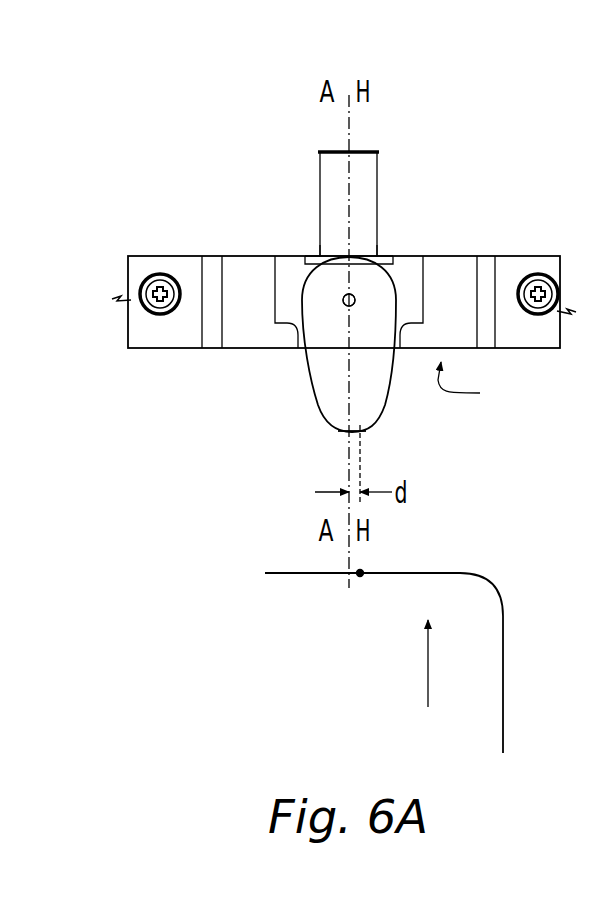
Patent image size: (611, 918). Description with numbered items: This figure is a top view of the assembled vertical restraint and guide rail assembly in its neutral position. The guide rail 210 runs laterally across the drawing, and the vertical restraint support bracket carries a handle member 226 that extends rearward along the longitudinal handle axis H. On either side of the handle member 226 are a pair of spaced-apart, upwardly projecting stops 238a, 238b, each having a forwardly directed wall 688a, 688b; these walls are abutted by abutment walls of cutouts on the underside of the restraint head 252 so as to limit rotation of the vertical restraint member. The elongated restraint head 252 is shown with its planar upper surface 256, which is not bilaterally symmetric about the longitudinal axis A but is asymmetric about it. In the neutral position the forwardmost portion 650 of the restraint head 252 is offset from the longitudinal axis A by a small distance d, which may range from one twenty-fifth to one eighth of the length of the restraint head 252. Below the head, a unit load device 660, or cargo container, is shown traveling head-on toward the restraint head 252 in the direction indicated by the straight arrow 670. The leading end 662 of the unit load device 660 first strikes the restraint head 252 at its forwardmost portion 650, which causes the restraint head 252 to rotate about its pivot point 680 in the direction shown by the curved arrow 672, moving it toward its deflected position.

The guide rail 210 is at (234, 273).
The handle member 226 is at (372, 150).
The upwardly projecting stop 238a is at (310, 255).
The upwardly projecting stop 238b is at (392, 255).
The forwardly directed wall 688a is at (300, 272).
The forwardly directed wall 688b is at (408, 275).
The restraint head 252 is at (321, 443).
The planar upper surface 256 is at (390, 347).
The forwardmost portion 650 is at (362, 436).
The curved arrow 672 is at (480, 387).
The pivot point 680 is at (345, 307).
The unit load device 660 is at (505, 663).
The leading end 662 is at (363, 571).
The straight arrow 670 is at (425, 663).